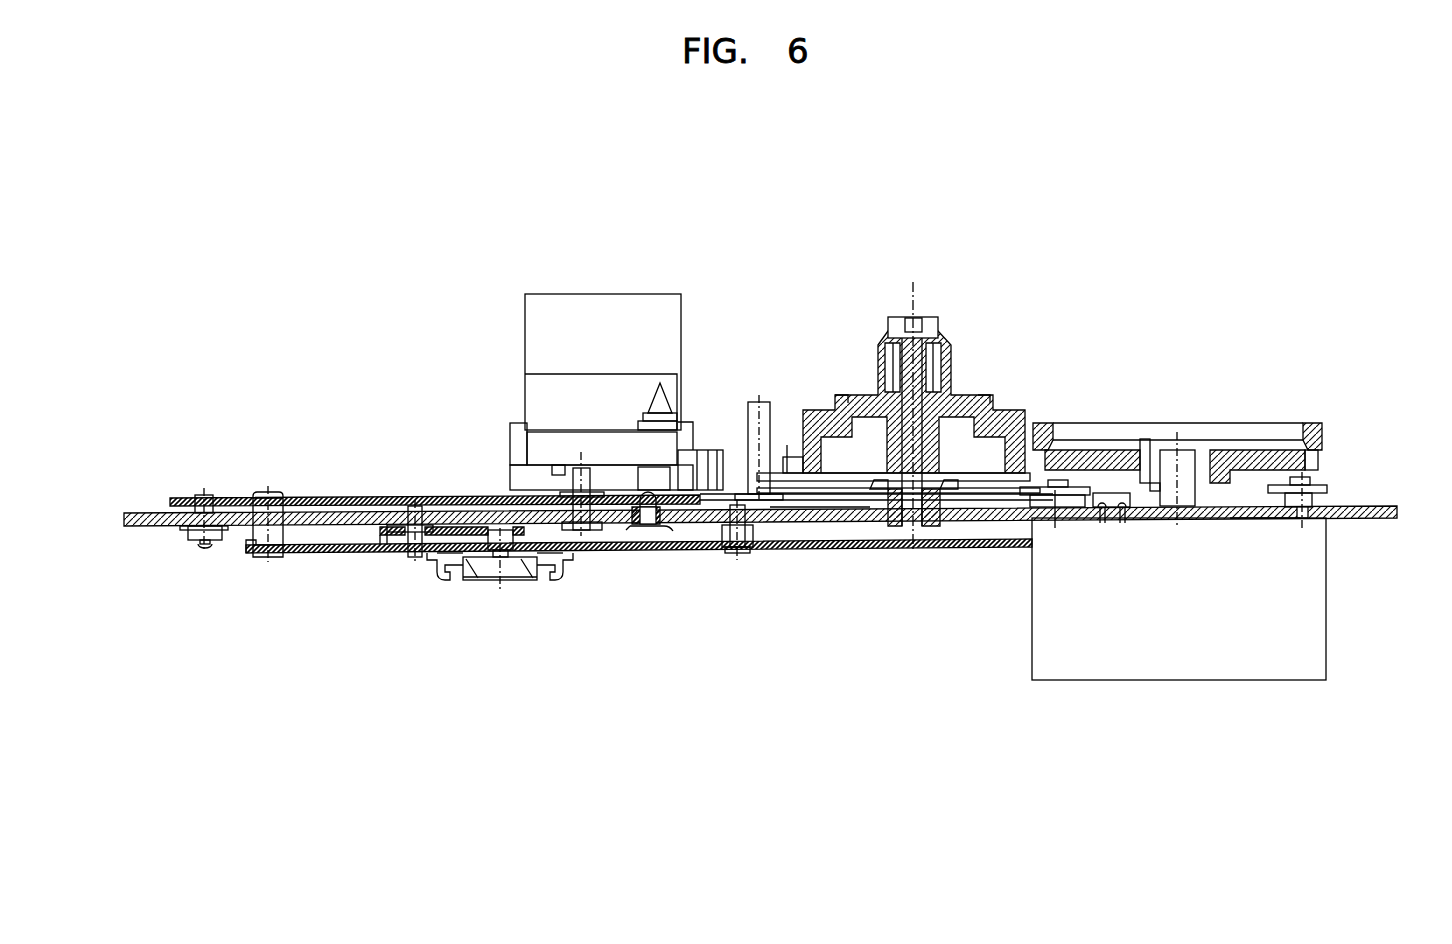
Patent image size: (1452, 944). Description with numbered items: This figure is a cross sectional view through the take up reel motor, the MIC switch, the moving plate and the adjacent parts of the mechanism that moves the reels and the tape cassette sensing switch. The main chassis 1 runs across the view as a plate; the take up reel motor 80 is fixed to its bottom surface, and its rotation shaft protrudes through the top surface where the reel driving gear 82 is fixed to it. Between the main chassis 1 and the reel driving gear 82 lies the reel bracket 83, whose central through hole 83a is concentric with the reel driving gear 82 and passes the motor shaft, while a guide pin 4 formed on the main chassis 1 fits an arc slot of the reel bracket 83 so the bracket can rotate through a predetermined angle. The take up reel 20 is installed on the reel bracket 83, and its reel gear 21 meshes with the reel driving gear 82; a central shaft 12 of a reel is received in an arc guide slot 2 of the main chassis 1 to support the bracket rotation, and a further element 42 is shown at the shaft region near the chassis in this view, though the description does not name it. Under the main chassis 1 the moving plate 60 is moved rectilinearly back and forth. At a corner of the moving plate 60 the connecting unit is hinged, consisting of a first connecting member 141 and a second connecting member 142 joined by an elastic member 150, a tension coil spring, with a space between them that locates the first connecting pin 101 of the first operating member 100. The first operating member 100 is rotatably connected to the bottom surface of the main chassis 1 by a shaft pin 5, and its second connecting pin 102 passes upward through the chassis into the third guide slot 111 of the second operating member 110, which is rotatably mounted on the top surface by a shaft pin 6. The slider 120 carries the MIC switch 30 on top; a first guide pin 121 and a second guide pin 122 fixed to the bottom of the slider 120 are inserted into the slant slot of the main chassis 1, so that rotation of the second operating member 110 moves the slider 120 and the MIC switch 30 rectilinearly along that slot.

The main chassis 1 is at (148, 512).
The arc guide slot 2 is at (942, 528).
The guide pin 4 is at (1300, 480).
The shaft pin 5 is at (412, 560).
The shaft pin 6 is at (210, 495).
The central shaft 12 is at (1190, 455).
The take up reel 20 is at (963, 352).
The reel gear 21 is at (803, 430).
The MIC switch 30 is at (597, 300).
The shaft boss 42 is at (915, 528).
The moving plate 60 is at (840, 550).
The take up reel motor 80 is at (1173, 682).
The reel driving gear 82 is at (1310, 425).
The reel bracket 83 is at (1327, 488).
The through hole 83a is at (1253, 507).
The first operating member 100 is at (330, 553).
The first connecting pin 101 is at (510, 576).
The second connecting pin 102 is at (265, 558).
The second operating member 110 is at (415, 506).
The third guide slot 111 is at (272, 492).
The slider 120 is at (510, 440).
The first guide pin 121 is at (590, 535).
The second guide pin 122 is at (655, 530).
The first connecting member 141 is at (445, 582).
The second connecting member 142 is at (560, 582).
The elastic member 150 is at (495, 576).